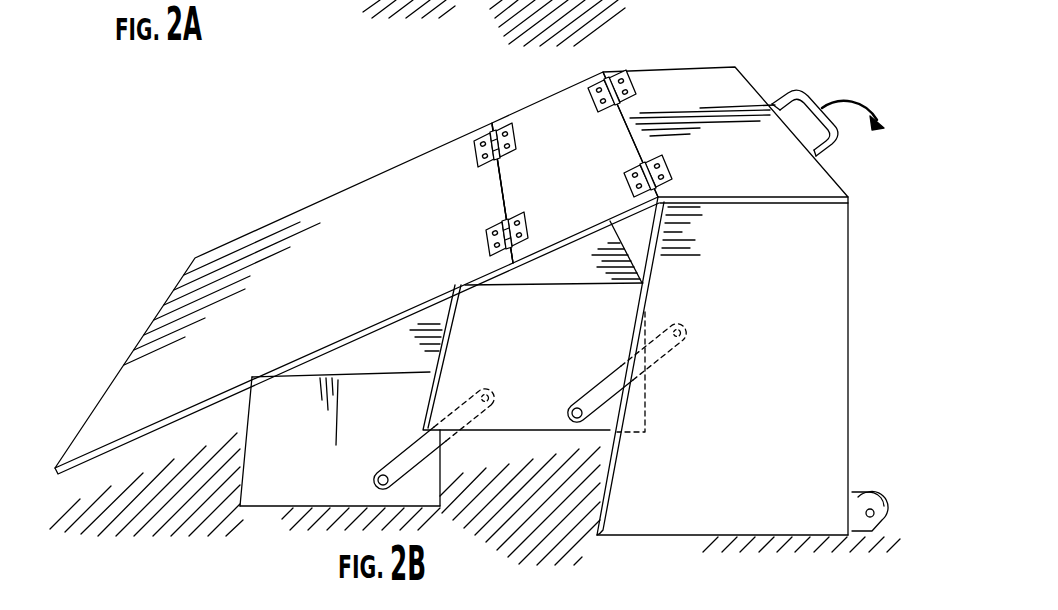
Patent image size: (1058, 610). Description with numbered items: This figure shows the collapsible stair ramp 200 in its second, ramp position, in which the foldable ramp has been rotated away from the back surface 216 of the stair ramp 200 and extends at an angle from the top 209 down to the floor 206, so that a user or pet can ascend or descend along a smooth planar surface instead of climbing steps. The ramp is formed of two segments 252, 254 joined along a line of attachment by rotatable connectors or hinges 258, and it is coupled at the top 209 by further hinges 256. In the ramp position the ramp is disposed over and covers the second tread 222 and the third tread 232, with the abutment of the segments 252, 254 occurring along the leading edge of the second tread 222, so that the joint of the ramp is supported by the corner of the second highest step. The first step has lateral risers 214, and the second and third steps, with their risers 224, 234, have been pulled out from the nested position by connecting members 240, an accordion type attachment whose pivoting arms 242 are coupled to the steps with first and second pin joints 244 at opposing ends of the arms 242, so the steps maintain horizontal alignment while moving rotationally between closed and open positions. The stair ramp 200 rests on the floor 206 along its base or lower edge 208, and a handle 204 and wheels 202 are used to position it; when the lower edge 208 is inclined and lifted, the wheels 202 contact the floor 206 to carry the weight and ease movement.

The stair ramp 200 is at (791, 42).
The wheels 202 is at (864, 500).
The handle 204 is at (828, 107).
The floor 206 is at (161, 500).
The base or lower edge 208 is at (342, 506).
The top of the stair ramp 209 is at (700, 53).
The lateral risers 214 is at (755, 356).
The back surface 216 is at (848, 330).
The second tread 222 is at (557, 280).
The second step risers 224 is at (528, 370).
The third tread 232 is at (368, 365).
The third step risers 234 is at (279, 475).
The connecting members 240 is at (597, 397).
The pivoting arms 242 is at (423, 447).
The pin joints 244 is at (491, 393).
The ramp segment 252 is at (555, 170).
The ramp segment 254 is at (371, 280).
The hinges 256 is at (630, 88).
The hinges 258 is at (474, 155).